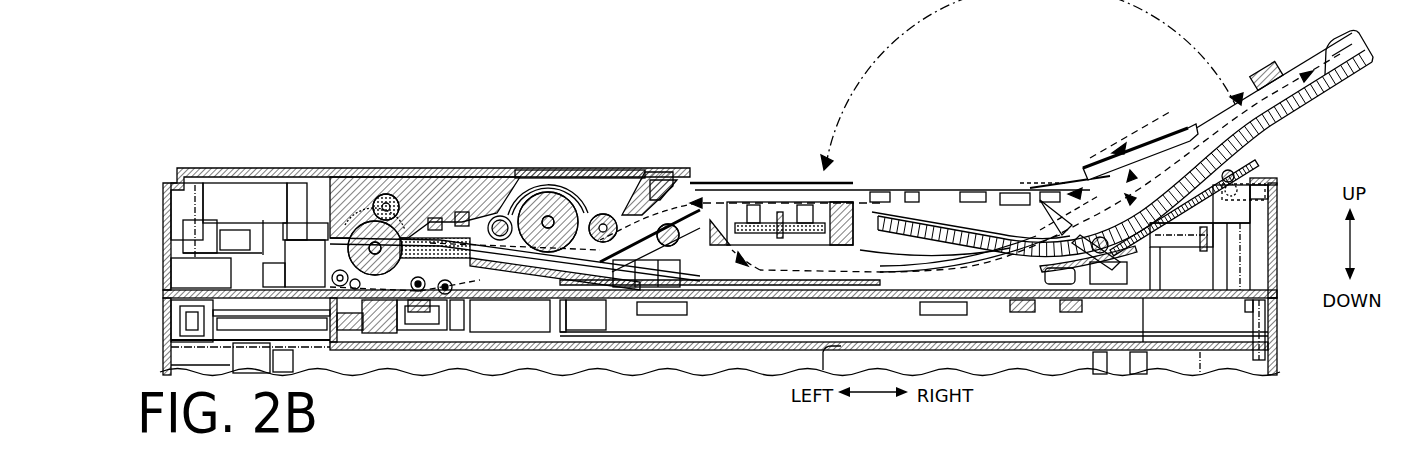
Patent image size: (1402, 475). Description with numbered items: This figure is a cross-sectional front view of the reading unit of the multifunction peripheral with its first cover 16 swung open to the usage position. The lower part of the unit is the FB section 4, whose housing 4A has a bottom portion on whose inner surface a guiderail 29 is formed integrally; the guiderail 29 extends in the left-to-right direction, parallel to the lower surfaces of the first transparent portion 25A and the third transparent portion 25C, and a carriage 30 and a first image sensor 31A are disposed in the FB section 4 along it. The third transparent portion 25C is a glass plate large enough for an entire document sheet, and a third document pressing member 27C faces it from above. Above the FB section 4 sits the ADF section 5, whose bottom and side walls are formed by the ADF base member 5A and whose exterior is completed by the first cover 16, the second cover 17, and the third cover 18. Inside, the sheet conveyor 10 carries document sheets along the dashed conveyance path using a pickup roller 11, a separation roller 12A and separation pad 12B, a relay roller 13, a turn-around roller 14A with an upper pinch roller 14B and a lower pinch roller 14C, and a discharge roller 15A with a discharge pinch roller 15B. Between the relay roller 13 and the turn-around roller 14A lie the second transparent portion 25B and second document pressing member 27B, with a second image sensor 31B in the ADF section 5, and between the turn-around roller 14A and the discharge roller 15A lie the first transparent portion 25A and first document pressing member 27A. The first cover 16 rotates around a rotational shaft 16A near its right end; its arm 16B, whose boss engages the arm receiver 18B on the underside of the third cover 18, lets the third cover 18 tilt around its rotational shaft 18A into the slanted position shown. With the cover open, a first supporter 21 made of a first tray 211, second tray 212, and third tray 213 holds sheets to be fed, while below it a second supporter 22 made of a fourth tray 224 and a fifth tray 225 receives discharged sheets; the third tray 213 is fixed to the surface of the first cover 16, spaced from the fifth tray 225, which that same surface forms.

The FB section 4 is at (1275, 292).
The housing 4A is at (1262, 320).
The ADF section 5 is at (1272, 179).
The ADF base member 5A is at (1276, 219).
The sheet conveyor 10 is at (549, 162).
The pickup roller 11 is at (610, 210).
The separation roller 12A is at (555, 190).
The separation pad 12B is at (548, 256).
The relay roller 13 is at (516, 210).
The turn-around roller 14A is at (368, 218).
The upper pinch roller 14B is at (388, 194).
The lower pinch roller 14C is at (334, 272).
The discharge roller 15A is at (667, 222).
The discharge pinch roller 15B is at (705, 240).
The first cover 16 is at (1303, 107).
The rotational shaft 16A is at (1040, 200).
The arm 16B is at (989, 200).
The second cover 17 is at (230, 168).
The third cover 18 is at (1252, 153).
The rotational shaft 18A is at (1254, 190).
The arm receiver 18B is at (1143, 281).
The first supporter 21 is at (961, 205).
The second supporter 22 is at (1020, 205).
The first transparent portion 25A is at (422, 330).
The second transparent portion 25B is at (436, 218).
The third transparent portion 25C is at (1072, 303).
The first document pressing member 27A is at (453, 296).
The second document pressing member 27B is at (460, 210).
The third document pressing member 27C is at (1022, 303).
The guiderail 29 is at (606, 338).
The carriage 30 is at (347, 334).
The first image sensor 31A is at (393, 332).
The second image sensor 31B is at (499, 215).
The first tray 211 is at (850, 214).
The second tray 212 is at (930, 210).
The third tray 213 is at (1176, 123).
The fourth tray 224 is at (903, 277).
The fifth tray 225 is at (1144, 168).